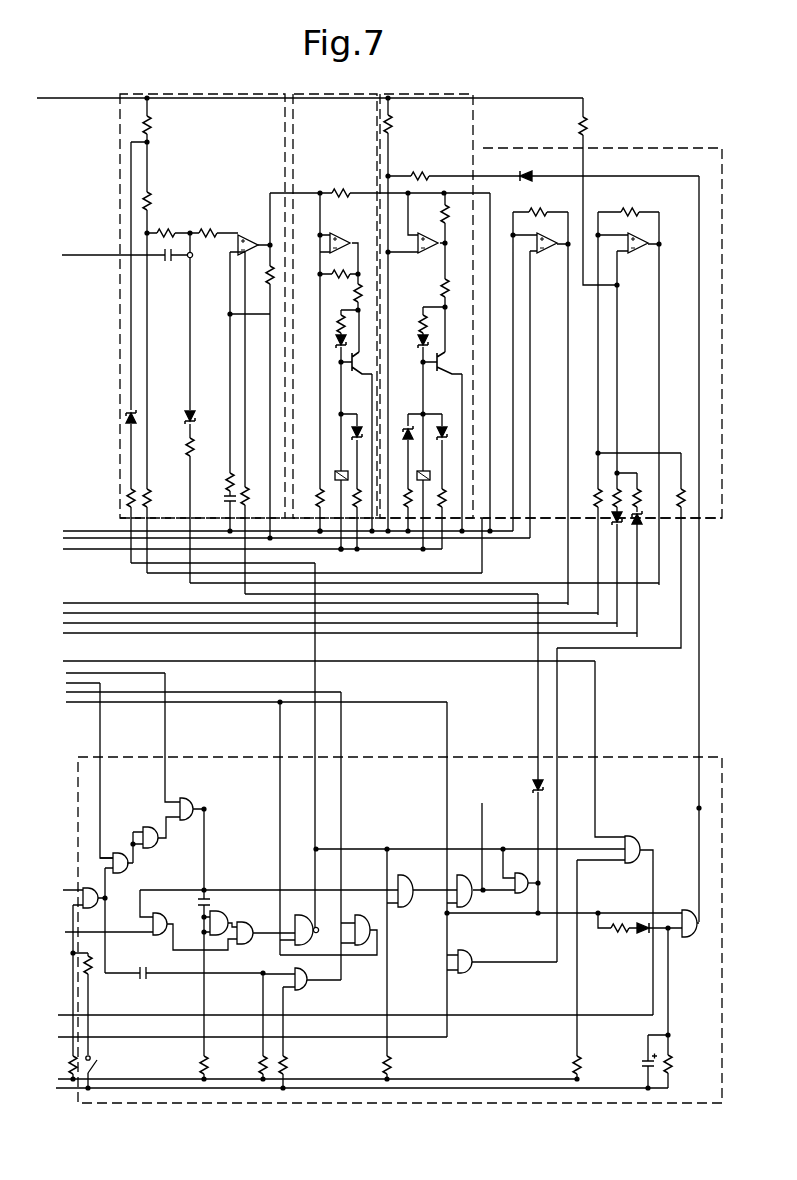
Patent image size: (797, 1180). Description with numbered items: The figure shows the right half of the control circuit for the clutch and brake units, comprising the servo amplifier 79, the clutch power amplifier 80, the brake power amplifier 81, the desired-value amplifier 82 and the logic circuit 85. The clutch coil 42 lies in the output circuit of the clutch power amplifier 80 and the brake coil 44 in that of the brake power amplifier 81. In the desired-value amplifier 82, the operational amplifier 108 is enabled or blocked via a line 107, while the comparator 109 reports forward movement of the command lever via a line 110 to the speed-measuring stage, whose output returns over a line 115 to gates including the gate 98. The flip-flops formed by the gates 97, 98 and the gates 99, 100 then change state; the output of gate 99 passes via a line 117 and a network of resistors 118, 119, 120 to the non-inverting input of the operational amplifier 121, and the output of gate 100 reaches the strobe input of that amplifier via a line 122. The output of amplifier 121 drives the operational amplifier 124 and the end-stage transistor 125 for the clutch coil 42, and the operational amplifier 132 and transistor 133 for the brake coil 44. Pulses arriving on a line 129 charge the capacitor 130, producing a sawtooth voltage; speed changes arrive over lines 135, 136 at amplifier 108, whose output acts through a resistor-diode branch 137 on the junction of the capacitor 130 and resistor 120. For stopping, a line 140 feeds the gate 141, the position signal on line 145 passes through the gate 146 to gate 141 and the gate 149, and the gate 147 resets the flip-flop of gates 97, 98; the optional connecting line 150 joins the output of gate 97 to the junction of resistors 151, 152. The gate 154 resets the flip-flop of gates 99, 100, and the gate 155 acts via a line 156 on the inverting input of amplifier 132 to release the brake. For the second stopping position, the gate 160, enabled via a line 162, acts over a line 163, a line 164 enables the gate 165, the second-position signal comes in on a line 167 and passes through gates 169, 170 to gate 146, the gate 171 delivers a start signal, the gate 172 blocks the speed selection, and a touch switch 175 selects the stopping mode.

The clutch coil 42 is at (335, 475).
The brake coil 44 is at (430, 475).
The servo amplifier 79 is at (122, 142).
The clutch power amplifier 80 is at (292, 132).
The brake power amplifier 81 is at (460, 130).
The desired-value amplifier 82 is at (558, 156).
The logic circuit 85 is at (648, 762).
The gate 97 is at (305, 919).
The gate 98 is at (366, 919).
The gate 99 is at (468, 881).
The gate 100 is at (520, 895).
The line 107 is at (100, 613).
The operational amplifier 108 is at (643, 254).
The operational-amplifier comparator 109 is at (552, 254).
The line 110 is at (150, 594).
The line 115 is at (252, 692).
The line 117 is at (485, 802).
The resistor 118 is at (151, 497).
The resistor 119 is at (166, 231).
The resistor 120 is at (210, 231).
The operational amplifier 121 is at (257, 222).
The line 122 is at (538, 752).
The operational amplifier 124 is at (347, 237).
The end-stage amplifying transistor 125 is at (357, 370).
The line 129 is at (82, 256).
The capacitor 130 is at (172, 258).
The operational amplifier 132 is at (430, 254).
The end amplifier transistor 133 is at (443, 370).
The line 135 is at (111, 626).
The line 136 is at (176, 635).
The resistor-diode branch 137 is at (187, 445).
The line 140 is at (65, 932).
The gate 141 is at (160, 937).
The line 145 is at (168, 681).
The gate 146 is at (190, 803).
The gate 147 is at (250, 947).
The gate 149 is at (222, 911).
The connecting line 150 is at (313, 802).
The resistor 151 is at (149, 127).
The resistor 152 is at (150, 197).
The gate 154 is at (405, 876).
The gate 155 is at (693, 938).
The line 156 is at (697, 809).
The gate 160 is at (633, 865).
The line 162 is at (240, 660).
The line 163 is at (135, 997).
The line 164 is at (72, 888).
The gate 165 is at (108, 895).
The line 167 is at (99, 736).
The gate 169 is at (124, 852).
The gate 170 is at (158, 832).
The gate 171 is at (306, 990).
The gate 172 is at (470, 972).
The touch switch 175 is at (100, 1060).